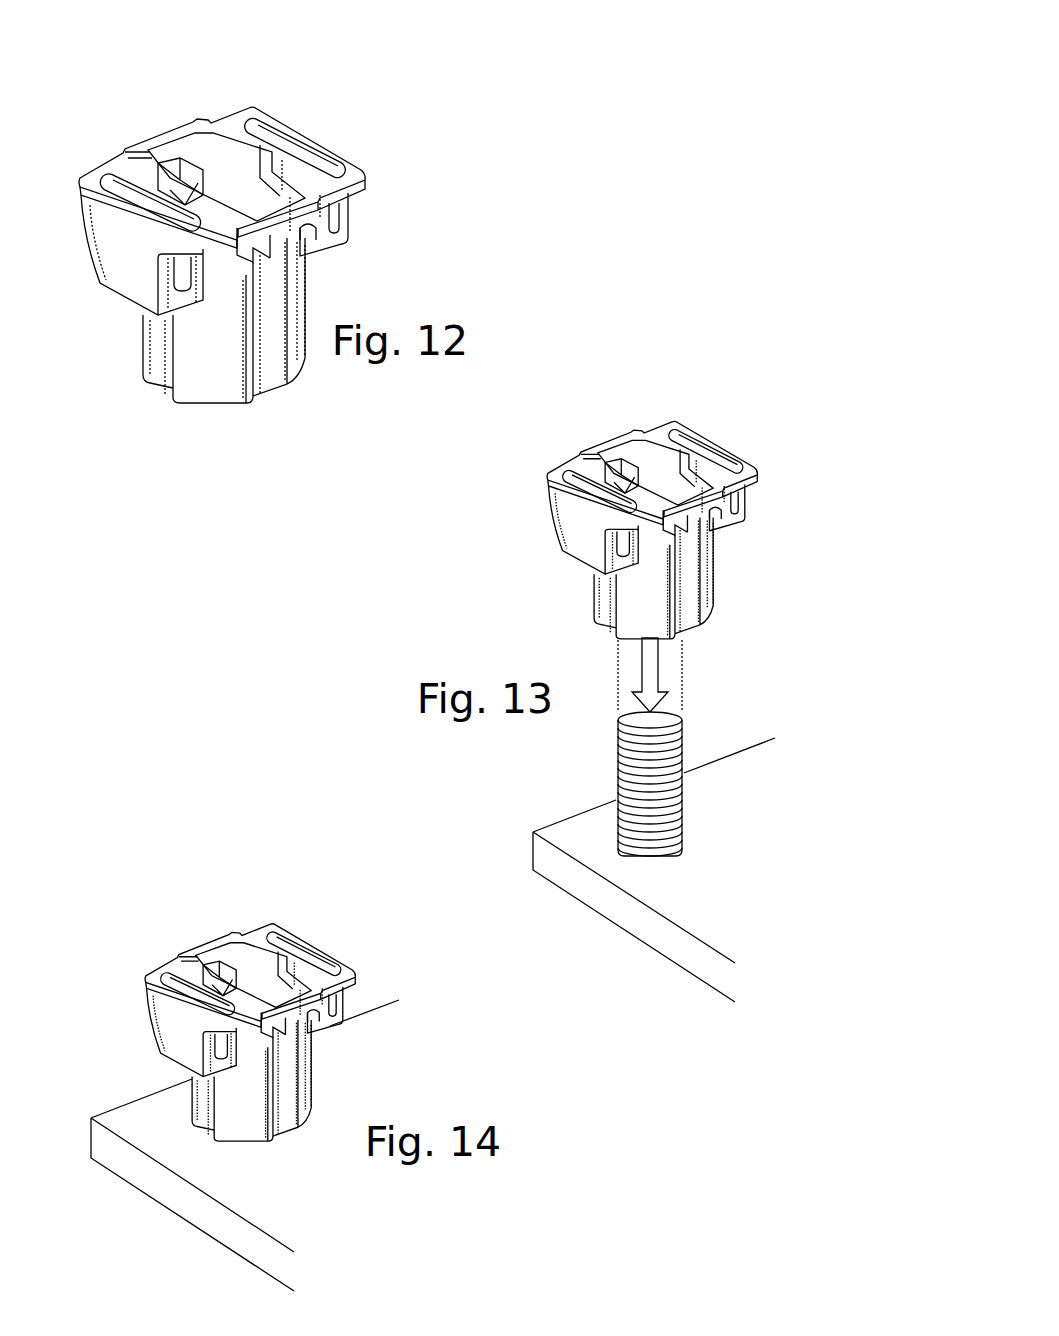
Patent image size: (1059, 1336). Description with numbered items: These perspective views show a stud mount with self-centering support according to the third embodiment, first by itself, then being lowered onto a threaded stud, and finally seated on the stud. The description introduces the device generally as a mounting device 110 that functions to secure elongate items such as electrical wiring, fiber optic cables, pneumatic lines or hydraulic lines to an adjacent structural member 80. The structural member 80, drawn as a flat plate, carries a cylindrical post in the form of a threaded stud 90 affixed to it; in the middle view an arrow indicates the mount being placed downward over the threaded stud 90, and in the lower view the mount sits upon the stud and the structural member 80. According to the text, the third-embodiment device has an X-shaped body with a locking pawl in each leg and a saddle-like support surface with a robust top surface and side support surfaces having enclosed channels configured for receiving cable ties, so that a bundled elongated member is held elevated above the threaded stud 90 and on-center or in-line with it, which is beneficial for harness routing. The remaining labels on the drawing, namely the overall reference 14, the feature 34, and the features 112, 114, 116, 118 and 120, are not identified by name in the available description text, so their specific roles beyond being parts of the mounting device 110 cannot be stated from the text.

In FIG. 12, the clip 14 is at (282, 75).
In FIG. 13, the clip 14 is at (689, 396).
In FIG. 14, the clip 14 is at (289, 902).
In FIG. 12, the tab 34 is at (138, 160).
In FIG. 13, the tab 34 is at (587, 457).
In FIG. 14, the tab 34 is at (187, 965).
In FIG. 13, the structural member 80 is at (560, 837).
In FIG. 14, the structural member 80 is at (123, 1121).
In FIG. 13, the threaded stud 90 is at (617, 752).
In FIG. 12, the mounting device 110 is at (224, 127).
In FIG. 13, the mounting device 110 is at (648, 425).
In FIG. 14, the mounting device 110 is at (247, 940).
In FIG. 12, the latch 112 is at (168, 162).
In FIG. 13, the latch 112 is at (613, 458).
In FIG. 14, the latch 112 is at (212, 968).
In FIG. 12, the slot 114 is at (110, 181).
In FIG. 13, the slot 114 is at (572, 473).
In FIG. 14, the slot 114 is at (168, 982).
In FIG. 12, the slot 116 is at (181, 290).
In FIG. 13, the slot 116 is at (620, 540).
In FIG. 14, the slot 116 is at (209, 1048).
In FIG. 12, the housing 118 is at (107, 247).
In FIG. 13, the housing 118 is at (570, 525).
In FIG. 14, the housing 118 is at (172, 1021).
In FIG. 12, the body 120 is at (220, 367).
In FIG. 13, the body 120 is at (690, 570).
In FIG. 14, the body 120 is at (291, 1090).